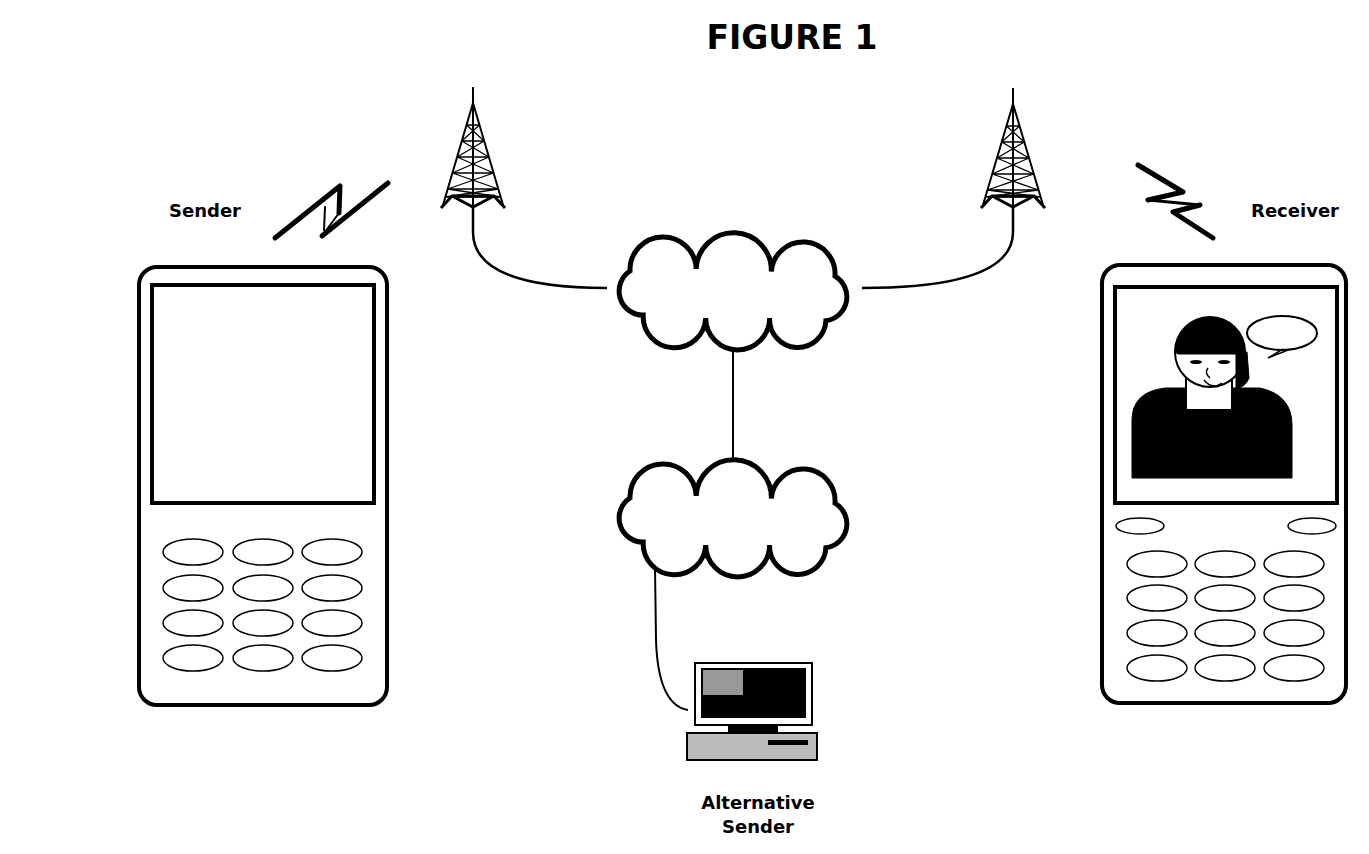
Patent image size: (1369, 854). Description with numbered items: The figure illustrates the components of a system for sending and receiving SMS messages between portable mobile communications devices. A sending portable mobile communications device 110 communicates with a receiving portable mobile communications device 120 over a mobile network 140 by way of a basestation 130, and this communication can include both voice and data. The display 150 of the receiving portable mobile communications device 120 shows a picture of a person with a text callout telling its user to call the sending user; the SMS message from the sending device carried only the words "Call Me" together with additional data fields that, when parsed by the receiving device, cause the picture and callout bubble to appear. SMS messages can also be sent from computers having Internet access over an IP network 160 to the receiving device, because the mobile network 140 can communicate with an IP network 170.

The sending portable mobile communications device 110 is at (260, 708).
The receiving portable mobile communications device 120 is at (1225, 706).
The basestation 130 is at (492, 160).
The mobile network 140 is at (733, 238).
The display 150 is at (1115, 420).
The IP network 160 is at (653, 468).
The IP network 170 is at (752, 662).